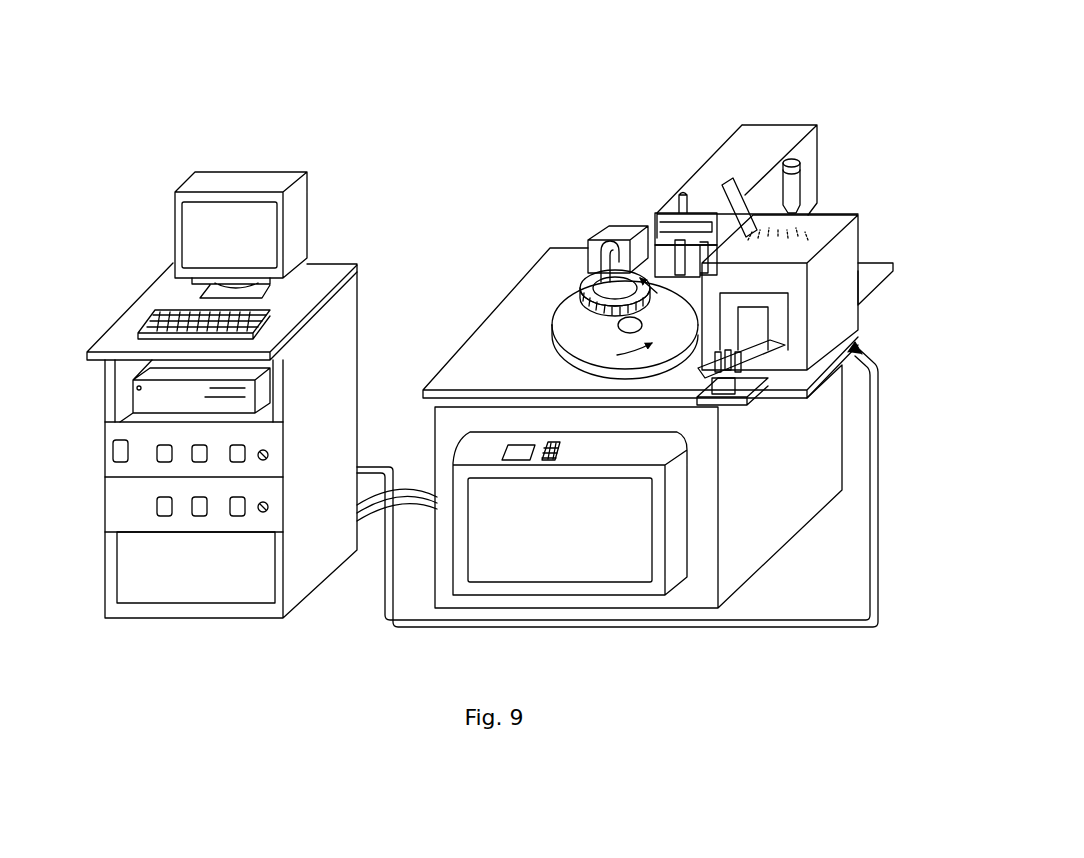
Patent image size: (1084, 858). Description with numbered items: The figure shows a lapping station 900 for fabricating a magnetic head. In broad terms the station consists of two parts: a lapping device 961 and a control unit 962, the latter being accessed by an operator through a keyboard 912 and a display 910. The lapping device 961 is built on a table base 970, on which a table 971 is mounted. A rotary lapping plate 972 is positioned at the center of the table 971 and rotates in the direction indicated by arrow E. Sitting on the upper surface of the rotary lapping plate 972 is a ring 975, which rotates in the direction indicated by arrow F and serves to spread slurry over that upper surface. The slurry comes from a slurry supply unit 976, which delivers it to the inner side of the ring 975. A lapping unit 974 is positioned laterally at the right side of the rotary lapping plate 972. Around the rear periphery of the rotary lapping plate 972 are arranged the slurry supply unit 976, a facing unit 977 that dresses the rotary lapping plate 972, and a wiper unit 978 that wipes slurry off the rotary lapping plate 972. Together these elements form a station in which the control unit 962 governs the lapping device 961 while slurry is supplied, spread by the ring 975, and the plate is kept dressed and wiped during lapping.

The lapping station 900 is at (687, 337).
The display 910 is at (168, 212).
The keyboard 912 is at (150, 322).
The lapping device 961 is at (855, 425).
The control unit 962 is at (133, 280).
The table base 970 is at (803, 527).
The table 971 is at (559, 255).
The rotary lapping plate 972 is at (573, 348).
The lapping unit 974 is at (868, 245).
The ring 975 is at (580, 288).
The slurry supply unit 976 is at (617, 225).
The facing unit 977 is at (797, 130).
The wiper unit 978 is at (803, 178).